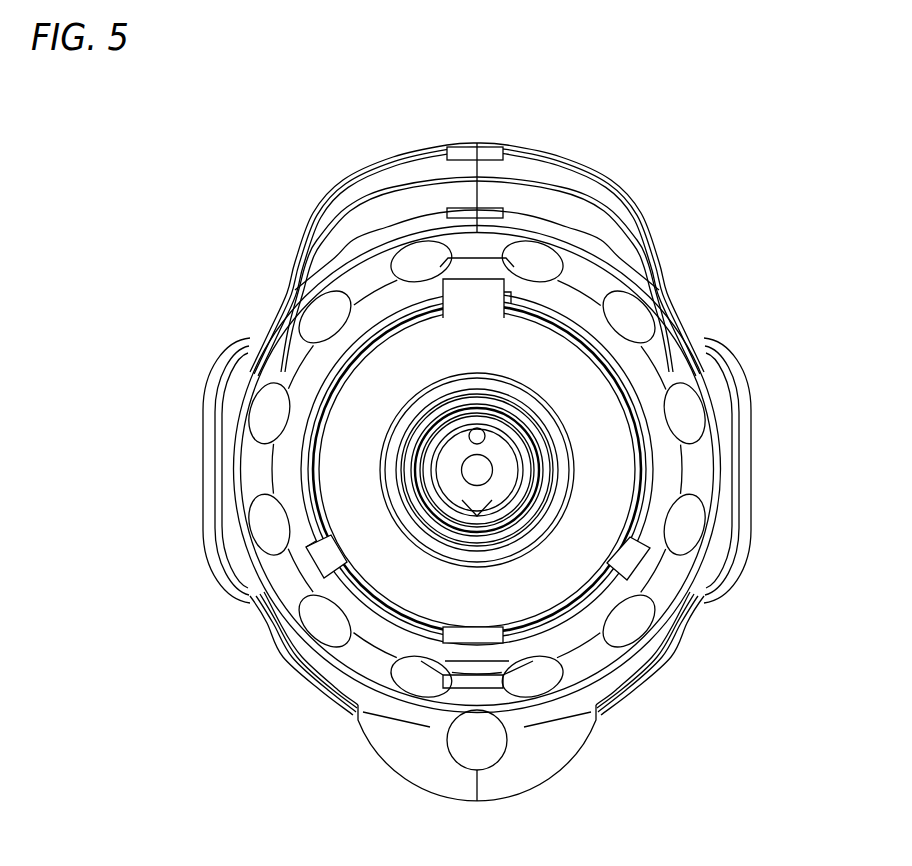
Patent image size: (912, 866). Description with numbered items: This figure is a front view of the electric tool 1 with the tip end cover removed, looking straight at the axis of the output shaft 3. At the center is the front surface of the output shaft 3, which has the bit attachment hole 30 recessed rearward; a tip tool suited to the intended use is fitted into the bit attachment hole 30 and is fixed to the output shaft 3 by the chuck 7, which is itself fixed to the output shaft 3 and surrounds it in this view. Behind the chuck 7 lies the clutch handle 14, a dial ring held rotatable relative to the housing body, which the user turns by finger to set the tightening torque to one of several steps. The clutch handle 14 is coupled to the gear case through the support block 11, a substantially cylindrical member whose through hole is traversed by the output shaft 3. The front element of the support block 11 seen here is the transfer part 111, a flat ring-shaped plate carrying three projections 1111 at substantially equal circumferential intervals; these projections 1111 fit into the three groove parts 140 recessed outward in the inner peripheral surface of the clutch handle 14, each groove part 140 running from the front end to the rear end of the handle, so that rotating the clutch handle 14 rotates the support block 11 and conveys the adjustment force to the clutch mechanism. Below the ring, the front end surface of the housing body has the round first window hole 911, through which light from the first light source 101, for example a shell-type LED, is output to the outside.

The electric tool 1 is at (658, 196).
The clutch handle 14 is at (665, 347).
The support block 11 is at (623, 468).
The transfer part 111 is at (410, 600).
The groove parts 140 is at (470, 279).
The projections 1111 is at (323, 548).
The chuck 7 is at (548, 508).
The output shaft 3 is at (508, 450).
The bit attachment hole 30 is at (445, 457).
The first light source 101 is at (483, 760).
The first window hole 911 is at (498, 738).